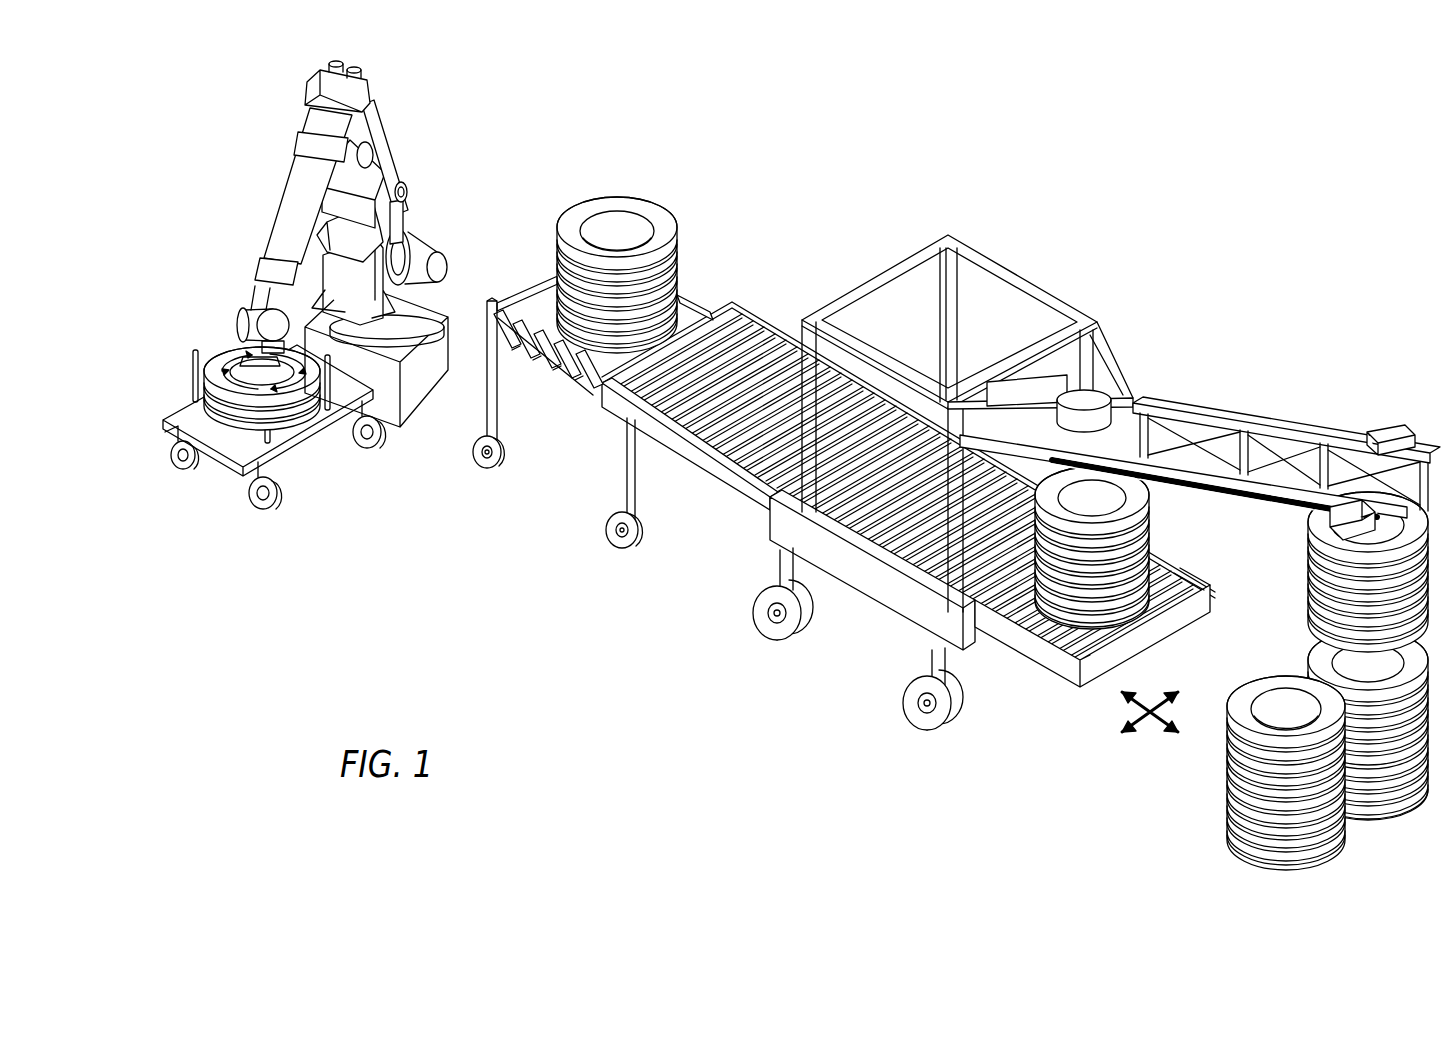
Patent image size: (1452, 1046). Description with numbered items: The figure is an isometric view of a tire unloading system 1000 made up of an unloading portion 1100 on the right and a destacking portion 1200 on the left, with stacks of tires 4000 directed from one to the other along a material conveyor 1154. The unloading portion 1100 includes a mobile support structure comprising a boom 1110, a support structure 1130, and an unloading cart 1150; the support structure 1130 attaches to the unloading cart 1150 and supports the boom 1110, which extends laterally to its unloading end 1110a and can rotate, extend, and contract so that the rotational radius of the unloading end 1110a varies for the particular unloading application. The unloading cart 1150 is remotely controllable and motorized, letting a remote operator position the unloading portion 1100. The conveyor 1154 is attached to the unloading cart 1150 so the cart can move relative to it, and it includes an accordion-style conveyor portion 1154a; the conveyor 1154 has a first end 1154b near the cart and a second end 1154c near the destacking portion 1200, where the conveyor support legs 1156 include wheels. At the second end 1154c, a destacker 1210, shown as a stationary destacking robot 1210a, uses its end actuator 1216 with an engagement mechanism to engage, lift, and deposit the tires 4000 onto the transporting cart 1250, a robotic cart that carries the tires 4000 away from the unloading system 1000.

The unloading system 1000 is at (781, 464).
The unloading portion 1100 is at (781, 520).
The boom 1110 is at (1200, 453).
The unloading end 1110a is at (1423, 476).
The support structure 1130 is at (905, 247).
The unloading cart 1150 is at (809, 512).
The material conveyor 1154 is at (785, 330).
The accordion-style conveyor portion 1154a is at (592, 410).
The first end 1154b is at (1133, 643).
The second end 1154c is at (515, 293).
The conveyor support legs 1156 is at (480, 412).
The destacking portion 1200 is at (329, 243).
The destacker 1210 is at (450, 205).
The stationary destacking robot 1210a is at (413, 197).
The end actuator 1216 is at (227, 370).
The transporting cart 1250 is at (298, 452).
The tires 4000 is at (738, 200).